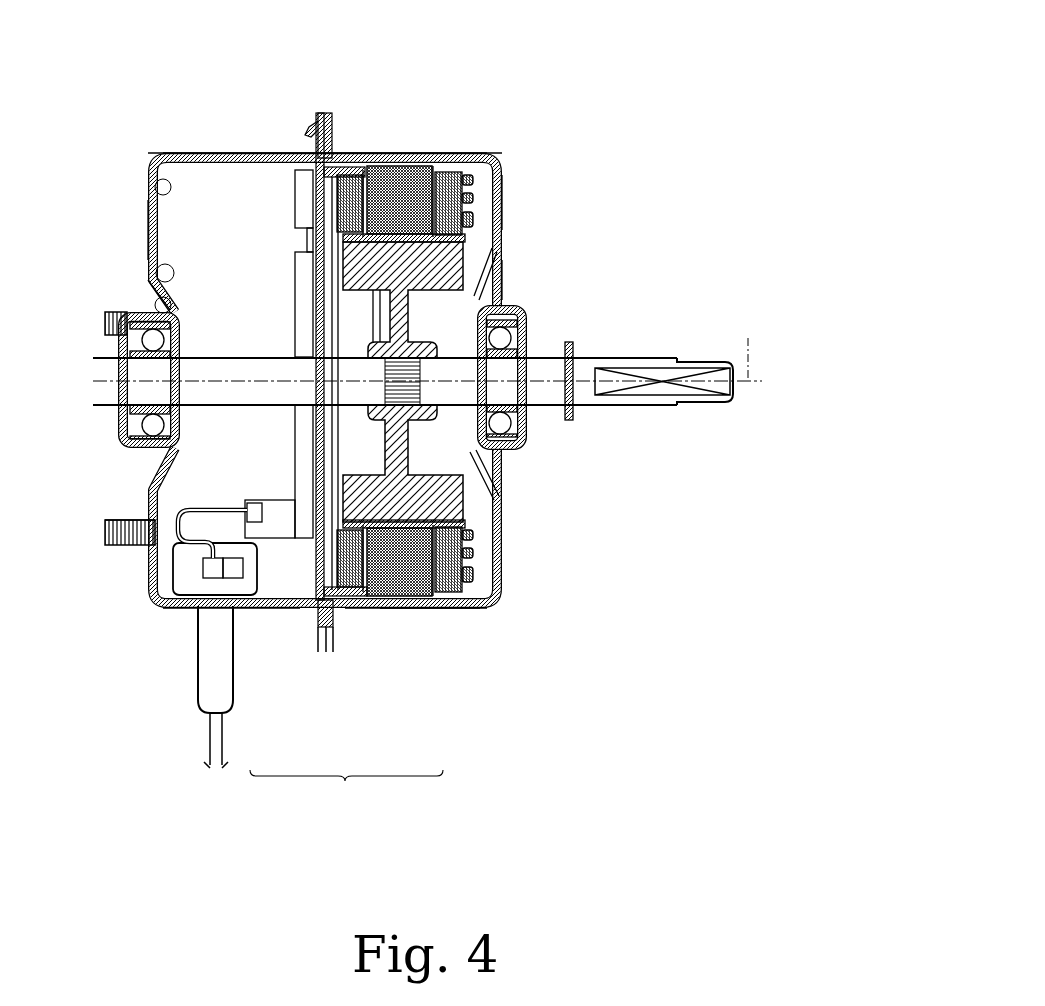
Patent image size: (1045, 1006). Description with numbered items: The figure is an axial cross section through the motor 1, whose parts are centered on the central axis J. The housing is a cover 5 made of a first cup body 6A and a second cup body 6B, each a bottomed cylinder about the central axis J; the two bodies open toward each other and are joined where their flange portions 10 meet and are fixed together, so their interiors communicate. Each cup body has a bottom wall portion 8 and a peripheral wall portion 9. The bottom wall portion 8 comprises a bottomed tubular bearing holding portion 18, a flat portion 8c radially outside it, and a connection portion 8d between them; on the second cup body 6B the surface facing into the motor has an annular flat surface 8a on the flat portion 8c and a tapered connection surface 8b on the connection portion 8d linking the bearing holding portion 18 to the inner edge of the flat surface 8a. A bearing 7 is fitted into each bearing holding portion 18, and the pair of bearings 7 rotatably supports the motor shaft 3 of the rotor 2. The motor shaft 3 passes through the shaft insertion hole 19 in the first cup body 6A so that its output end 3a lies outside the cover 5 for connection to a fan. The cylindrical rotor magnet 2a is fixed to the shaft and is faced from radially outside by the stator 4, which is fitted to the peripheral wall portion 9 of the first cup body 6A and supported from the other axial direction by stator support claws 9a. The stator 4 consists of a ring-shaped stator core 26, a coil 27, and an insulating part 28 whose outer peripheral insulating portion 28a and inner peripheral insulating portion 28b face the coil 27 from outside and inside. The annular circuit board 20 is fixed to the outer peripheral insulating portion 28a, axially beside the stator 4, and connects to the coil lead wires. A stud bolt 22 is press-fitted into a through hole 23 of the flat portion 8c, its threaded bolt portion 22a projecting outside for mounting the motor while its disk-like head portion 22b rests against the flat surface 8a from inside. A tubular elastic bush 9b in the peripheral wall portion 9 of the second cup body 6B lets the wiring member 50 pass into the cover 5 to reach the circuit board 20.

The motor 1 is at (640, 88).
The rotor 2 is at (447, 262).
The rotor magnet 2a is at (440, 498).
The motor shaft 3 is at (585, 365).
The output end 3a is at (712, 400).
The stator 4 is at (413, 180).
The cover 5 is at (346, 790).
The first cup body 6A is at (416, 613).
The second cup body 6B is at (250, 613).
The bearing 7 is at (135, 452).
The bottom wall portion 8 is at (145, 508).
The flat surface 8a is at (158, 187).
The connection surface 8b is at (152, 262).
The flat portion 8c is at (150, 225).
The connection portion 8d is at (160, 287).
The peripheral wall portion 9 is at (213, 153).
The stator support claw 9a is at (437, 612).
The bush 9b is at (210, 672).
The flange portion 10 is at (320, 653).
The bearing holding portion 18 is at (165, 307).
The shaft insertion hole 19 is at (533, 400).
The circuit board 20 is at (307, 267).
The stud bolt 22 is at (105, 548).
The bolt portion 22a is at (127, 548).
The head portion 22b is at (158, 505).
The through hole 23 is at (168, 553).
The stator core 26 is at (403, 170).
The coil 27 is at (362, 180).
The insulating part 28 is at (352, 167).
The outer peripheral insulating portion 28a is at (336, 160).
The inner peripheral insulating portion 28b is at (300, 155).
The wiring member 50 is at (205, 748).
The central axis J is at (746, 343).